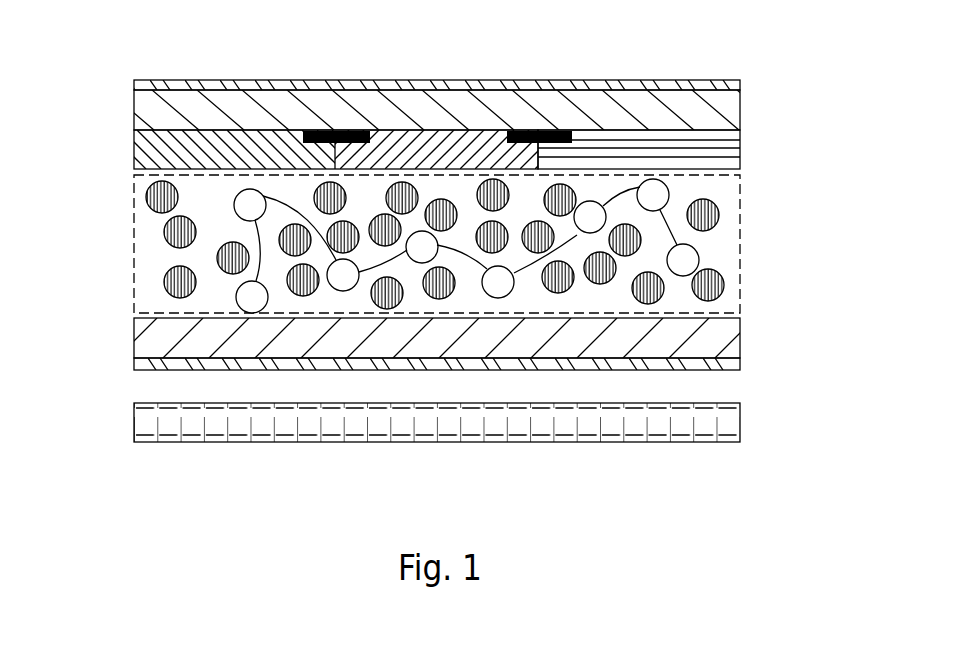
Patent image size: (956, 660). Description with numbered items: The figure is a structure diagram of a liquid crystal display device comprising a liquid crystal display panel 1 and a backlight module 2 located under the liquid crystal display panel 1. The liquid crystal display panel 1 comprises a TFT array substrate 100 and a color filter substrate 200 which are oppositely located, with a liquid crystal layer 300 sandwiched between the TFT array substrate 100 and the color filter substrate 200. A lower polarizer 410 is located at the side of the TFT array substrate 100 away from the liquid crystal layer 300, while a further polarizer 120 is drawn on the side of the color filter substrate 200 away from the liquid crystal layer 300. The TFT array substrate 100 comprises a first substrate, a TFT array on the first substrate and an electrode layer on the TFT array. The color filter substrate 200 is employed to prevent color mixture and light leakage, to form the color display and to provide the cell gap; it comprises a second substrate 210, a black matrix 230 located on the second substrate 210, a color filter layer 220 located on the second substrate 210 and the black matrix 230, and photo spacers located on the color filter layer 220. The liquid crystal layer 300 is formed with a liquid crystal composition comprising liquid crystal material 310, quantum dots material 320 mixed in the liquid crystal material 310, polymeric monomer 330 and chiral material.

The liquid crystal display panel 1 is at (85, 90).
The backlight module 2 is at (150, 427).
The TFT array substrate 100 is at (690, 342).
The upper polarizer 120 is at (697, 88).
The color filter substrate 200 is at (822, 80).
The second substrate 210 is at (698, 105).
The color filter layer 220 is at (697, 165).
The black matrix 230 is at (572, 138).
The liquid crystal layer 300 is at (740, 272).
The liquid crystal material 310 is at (162, 258).
The quantum dots material 320 is at (164, 232).
The polymeric monomer 330 is at (250, 296).
The lower polarizer 410 is at (697, 363).